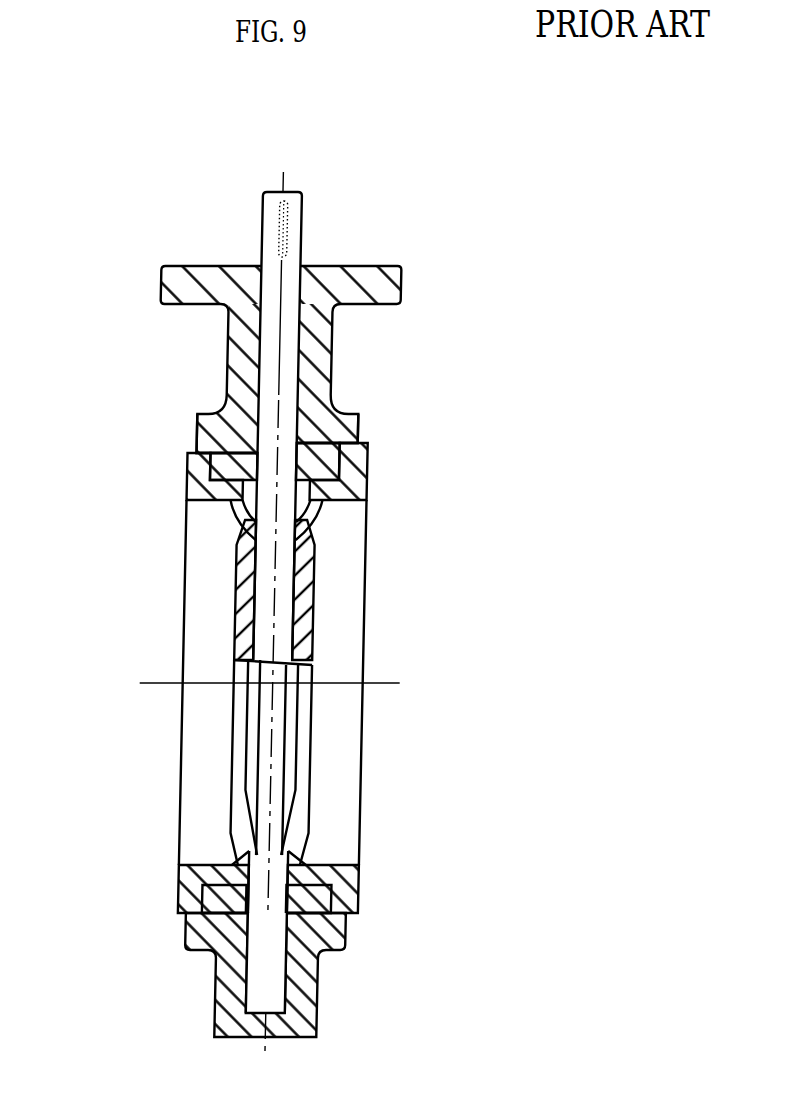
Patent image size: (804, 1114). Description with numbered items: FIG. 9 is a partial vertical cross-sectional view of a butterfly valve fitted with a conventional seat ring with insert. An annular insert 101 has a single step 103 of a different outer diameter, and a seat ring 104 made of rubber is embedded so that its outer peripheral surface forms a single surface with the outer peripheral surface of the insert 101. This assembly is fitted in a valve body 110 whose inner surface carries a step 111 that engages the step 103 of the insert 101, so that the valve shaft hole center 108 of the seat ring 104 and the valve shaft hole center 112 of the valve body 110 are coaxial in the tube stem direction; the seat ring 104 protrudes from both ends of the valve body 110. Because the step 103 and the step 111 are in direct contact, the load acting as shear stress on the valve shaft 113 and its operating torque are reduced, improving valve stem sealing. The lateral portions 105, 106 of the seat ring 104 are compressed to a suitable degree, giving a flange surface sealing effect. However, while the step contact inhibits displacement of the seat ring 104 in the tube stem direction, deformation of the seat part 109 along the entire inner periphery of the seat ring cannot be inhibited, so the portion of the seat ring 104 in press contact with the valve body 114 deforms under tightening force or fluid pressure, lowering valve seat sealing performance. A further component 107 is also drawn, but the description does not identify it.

The annular insert 101 is at (218, 468).
The step 103 is at (327, 418).
The seat ring 104 is at (358, 483).
The lateral portion 105 is at (373, 467).
The lateral portion 106 is at (200, 475).
The sleeve 107 is at (325, 603).
The valve shaft hole center 108 is at (327, 548).
The seat part 109 is at (253, 498).
The valve body 110 is at (166, 283).
The step 111 is at (378, 911).
The valve shaft hole center 112 is at (289, 185).
The valve shaft 113 is at (308, 202).
The valve body 114 is at (255, 793).